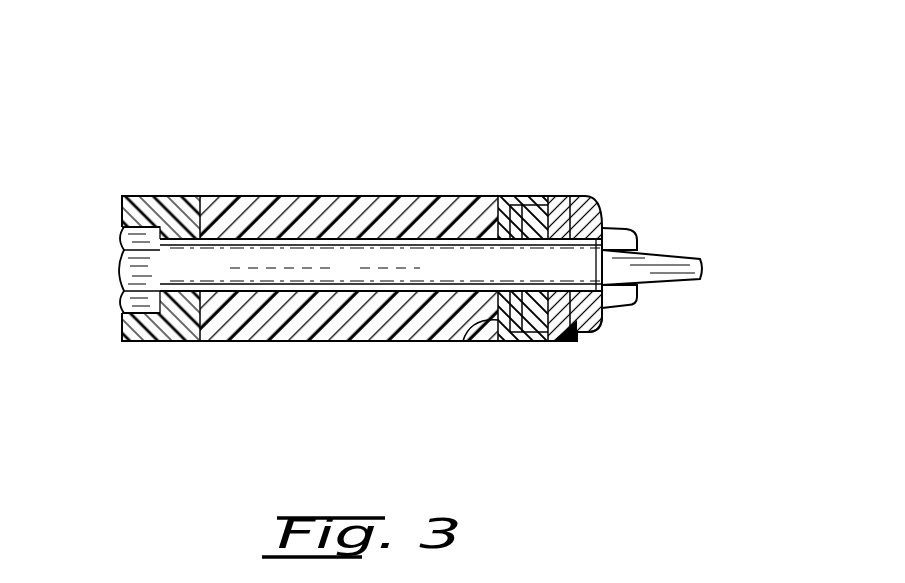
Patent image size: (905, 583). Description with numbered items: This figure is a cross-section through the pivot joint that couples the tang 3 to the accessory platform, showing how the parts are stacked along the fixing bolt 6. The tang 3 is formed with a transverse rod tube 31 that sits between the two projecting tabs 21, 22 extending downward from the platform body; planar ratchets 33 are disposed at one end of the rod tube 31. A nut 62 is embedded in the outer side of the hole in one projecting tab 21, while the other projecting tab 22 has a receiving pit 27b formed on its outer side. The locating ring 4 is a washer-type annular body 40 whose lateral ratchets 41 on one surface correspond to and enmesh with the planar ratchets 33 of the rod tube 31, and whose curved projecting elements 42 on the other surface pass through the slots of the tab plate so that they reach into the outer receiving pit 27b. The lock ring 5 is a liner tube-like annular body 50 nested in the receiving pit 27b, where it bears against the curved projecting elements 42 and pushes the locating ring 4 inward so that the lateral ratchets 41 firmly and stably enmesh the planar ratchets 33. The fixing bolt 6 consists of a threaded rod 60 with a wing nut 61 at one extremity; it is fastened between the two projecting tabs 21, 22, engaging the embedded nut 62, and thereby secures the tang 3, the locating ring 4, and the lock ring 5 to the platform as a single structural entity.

The tang 3 is at (357, 186).
The locating ring 4 is at (508, 186).
The lock ring 5 is at (606, 190).
The fixing bolt 6 is at (295, 313).
The projecting tab 21 is at (176, 196).
The projecting tab 22 is at (569, 196).
The receiving pit 27b is at (603, 222).
The transverse rod tube 31 is at (415, 196).
The planar ratchets 33 is at (563, 345).
The annular body 40 is at (509, 322).
The lateral ratchets 41 is at (465, 340).
The curved projecting elements 42 is at (545, 196).
The annular body 50 is at (590, 328).
The threaded rod 60 is at (346, 262).
The wing nut 61 is at (700, 260).
The nut 62 is at (120, 278).